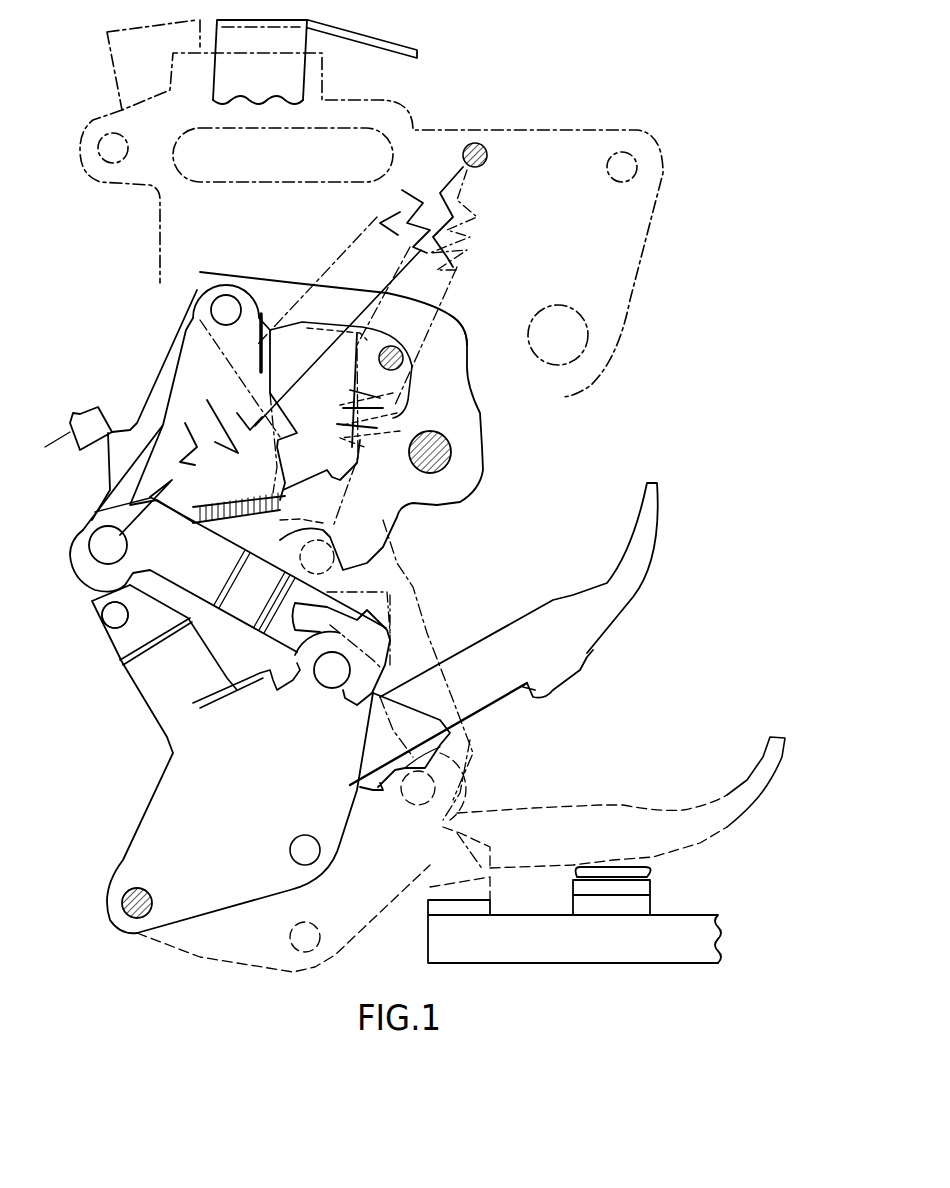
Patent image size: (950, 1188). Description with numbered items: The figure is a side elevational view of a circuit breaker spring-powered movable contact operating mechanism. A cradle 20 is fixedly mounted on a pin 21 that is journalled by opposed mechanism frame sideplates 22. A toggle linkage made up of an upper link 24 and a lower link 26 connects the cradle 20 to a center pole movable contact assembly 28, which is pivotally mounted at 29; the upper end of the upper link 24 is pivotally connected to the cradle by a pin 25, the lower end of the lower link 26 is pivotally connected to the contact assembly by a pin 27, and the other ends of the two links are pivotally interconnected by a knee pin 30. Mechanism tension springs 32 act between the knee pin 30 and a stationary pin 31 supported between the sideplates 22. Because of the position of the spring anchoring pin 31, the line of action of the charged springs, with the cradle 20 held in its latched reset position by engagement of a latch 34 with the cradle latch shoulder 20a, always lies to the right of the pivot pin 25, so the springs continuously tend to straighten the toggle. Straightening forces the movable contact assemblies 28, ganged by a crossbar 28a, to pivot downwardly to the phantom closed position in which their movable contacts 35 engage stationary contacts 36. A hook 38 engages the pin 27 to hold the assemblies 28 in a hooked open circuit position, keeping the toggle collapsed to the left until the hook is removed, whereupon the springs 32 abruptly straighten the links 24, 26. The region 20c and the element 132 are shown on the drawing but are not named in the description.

The cradle 20 is at (457, 403).
The cradle latch shoulder 20a is at (120, 430).
The latch body shoulder 20c is at (463, 322).
The pin 21 is at (445, 455).
The mechanism frame sideplates 22 is at (371, 208).
The upper link 24 is at (190, 407).
The pin 25 is at (215, 295).
The lower link 26 is at (228, 566).
The pin 27 is at (325, 685).
The movable contact assembly 28 is at (160, 820).
The crossbar 28a is at (153, 690).
The pivot 29 is at (123, 890).
The knee pin 30 is at (108, 557).
The stationary pin 31 is at (478, 143).
The mechanism tension springs 32 is at (405, 195).
The latch 34 is at (50, 444).
The movable contacts 35 is at (520, 733).
The stationary contacts 36 is at (573, 887).
The hook 38 is at (380, 650).
The plate hole 132 is at (115, 617).